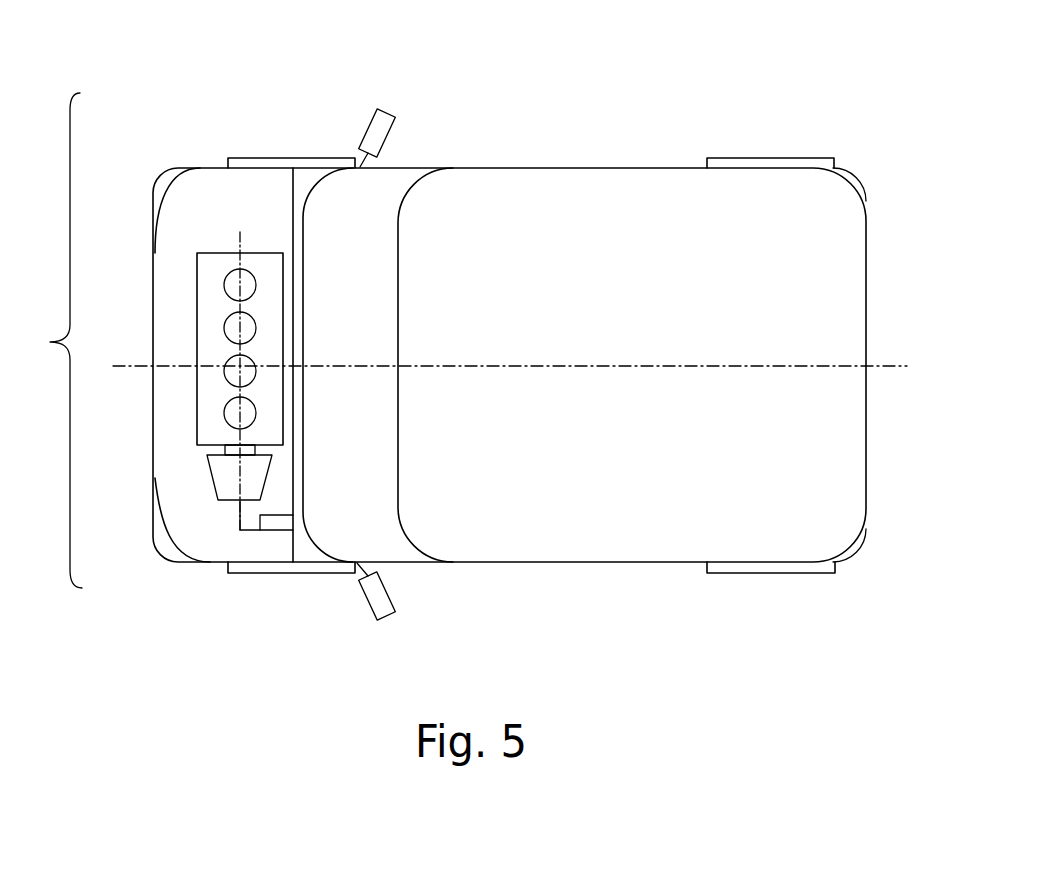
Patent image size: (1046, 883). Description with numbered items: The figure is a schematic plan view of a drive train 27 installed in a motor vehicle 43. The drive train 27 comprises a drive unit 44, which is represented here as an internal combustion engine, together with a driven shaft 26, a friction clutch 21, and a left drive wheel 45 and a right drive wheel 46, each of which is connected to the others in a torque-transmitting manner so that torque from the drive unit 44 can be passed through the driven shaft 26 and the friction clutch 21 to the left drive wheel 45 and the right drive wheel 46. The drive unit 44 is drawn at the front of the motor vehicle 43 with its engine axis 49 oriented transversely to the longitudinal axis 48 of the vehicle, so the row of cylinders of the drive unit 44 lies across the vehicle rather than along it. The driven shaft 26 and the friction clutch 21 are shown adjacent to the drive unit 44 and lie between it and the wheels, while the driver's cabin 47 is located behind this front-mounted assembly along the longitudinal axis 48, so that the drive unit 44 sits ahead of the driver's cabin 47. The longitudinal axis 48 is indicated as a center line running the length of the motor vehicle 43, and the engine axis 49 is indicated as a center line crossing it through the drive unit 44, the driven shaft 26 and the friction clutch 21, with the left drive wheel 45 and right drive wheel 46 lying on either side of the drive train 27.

The motor vehicle 43 is at (680, 108).
The driver's cabin 47 is at (505, 202).
The right drive wheel 46 is at (233, 158).
The left drive wheel 45 is at (228, 567).
The longitudinal axis 48 is at (627, 367).
The engine axis 49 is at (240, 234).
The drive unit 44 is at (195, 280).
The driven shaft 26 is at (223, 452).
The friction clutch 21 is at (213, 490).
The drive train 27 is at (48, 340).